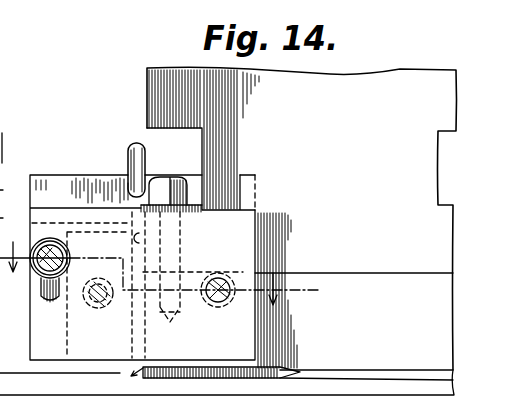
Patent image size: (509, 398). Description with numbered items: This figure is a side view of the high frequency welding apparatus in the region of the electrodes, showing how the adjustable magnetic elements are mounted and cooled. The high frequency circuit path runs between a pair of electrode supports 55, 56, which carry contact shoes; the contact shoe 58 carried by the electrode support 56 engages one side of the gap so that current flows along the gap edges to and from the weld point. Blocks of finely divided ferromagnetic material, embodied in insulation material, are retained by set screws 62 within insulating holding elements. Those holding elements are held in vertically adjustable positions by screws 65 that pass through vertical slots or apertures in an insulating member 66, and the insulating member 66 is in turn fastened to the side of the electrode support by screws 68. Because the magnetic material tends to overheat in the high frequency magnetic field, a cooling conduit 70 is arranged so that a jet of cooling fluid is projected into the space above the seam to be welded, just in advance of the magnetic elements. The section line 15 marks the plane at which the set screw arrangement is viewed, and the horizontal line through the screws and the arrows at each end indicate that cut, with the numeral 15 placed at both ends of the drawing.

The electrode support 56 is at (369, 82).
The contact shoe 58 is at (308, 367).
The set screw 62 is at (95, 308).
The screw 65 is at (55, 242).
The screw 68 is at (215, 307).
The conduit 70 is at (131, 148).
The section line 15- 15 is at (160, 274).
The insulating member 66 is at (9, 193).
The electrode support 55 is at (9, 220).